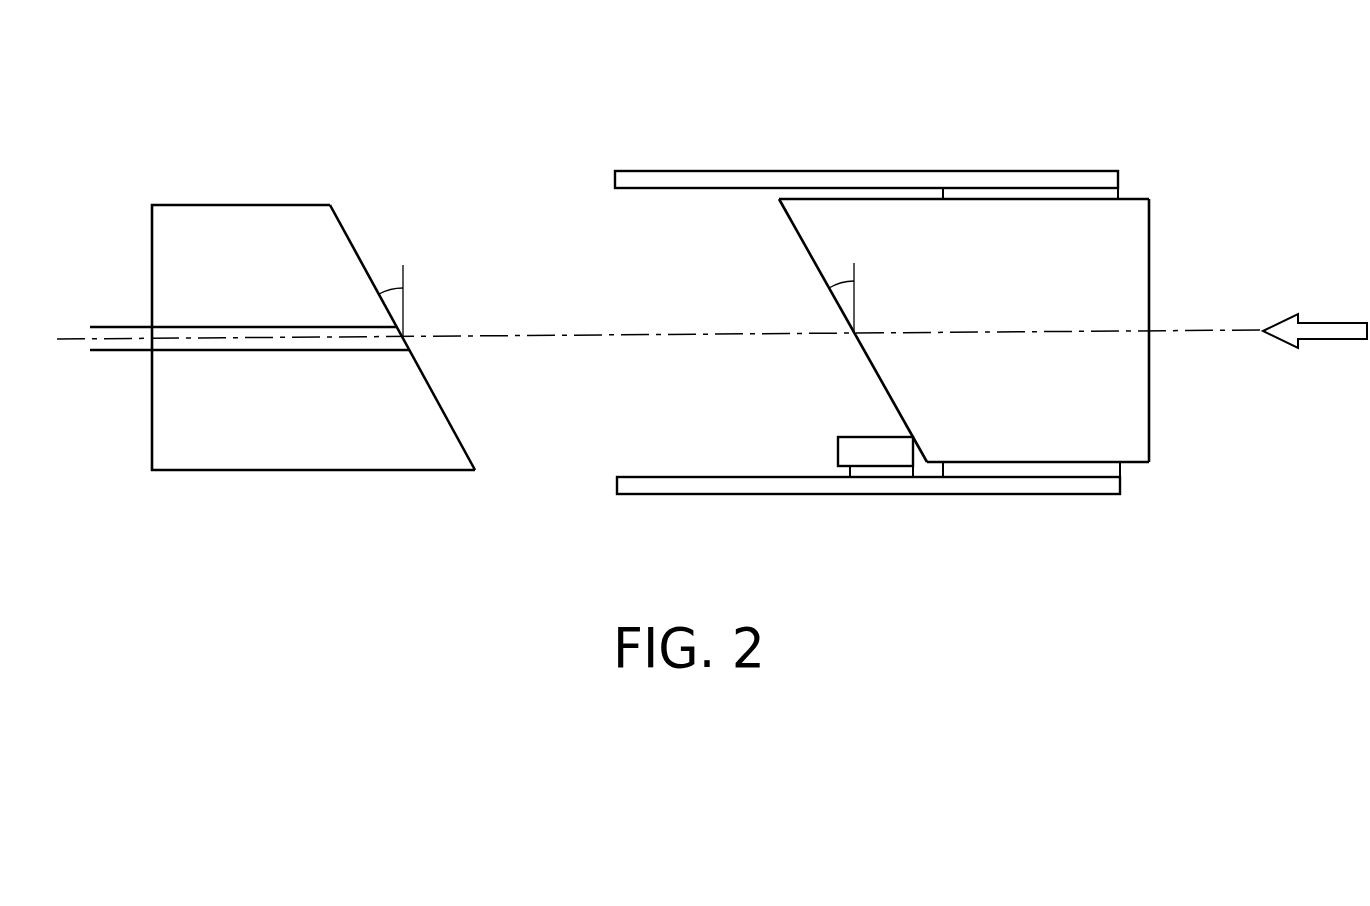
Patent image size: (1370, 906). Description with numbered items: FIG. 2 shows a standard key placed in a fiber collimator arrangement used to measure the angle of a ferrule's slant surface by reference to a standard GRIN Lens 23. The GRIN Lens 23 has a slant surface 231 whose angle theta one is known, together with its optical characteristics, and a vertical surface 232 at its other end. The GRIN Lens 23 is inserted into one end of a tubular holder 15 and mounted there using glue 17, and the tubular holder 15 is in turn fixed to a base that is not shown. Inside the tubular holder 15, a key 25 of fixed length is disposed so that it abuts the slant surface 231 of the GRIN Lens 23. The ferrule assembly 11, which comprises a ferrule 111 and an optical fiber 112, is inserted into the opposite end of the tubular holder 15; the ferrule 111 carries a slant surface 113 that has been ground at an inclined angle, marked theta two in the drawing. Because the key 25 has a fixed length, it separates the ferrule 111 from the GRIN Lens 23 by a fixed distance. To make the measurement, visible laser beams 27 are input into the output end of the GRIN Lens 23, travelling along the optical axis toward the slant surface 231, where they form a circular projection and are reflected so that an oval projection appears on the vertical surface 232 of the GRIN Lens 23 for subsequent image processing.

The ferrule assembly 11 is at (313, 133).
The ferrule 111 is at (308, 248).
The optical fiber 112 is at (222, 337).
The slant surface 113 is at (347, 232).
The tubular holder 15 is at (763, 171).
The glue 17 is at (1037, 468).
The GRIN Lens 23 is at (1028, 235).
The slant surface 231 is at (800, 245).
The vertical surface 232 is at (1150, 228).
The key 25 is at (875, 453).
The visible laser beams 27 is at (1327, 320).